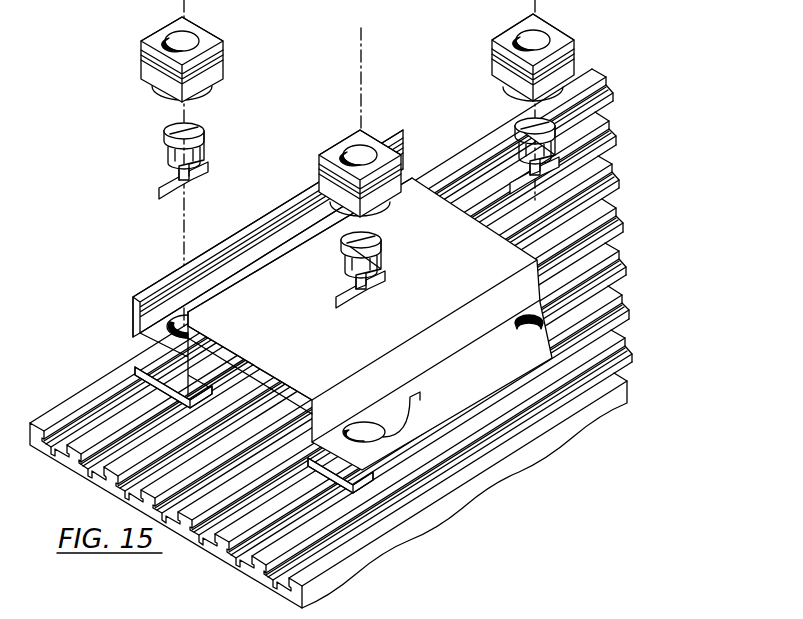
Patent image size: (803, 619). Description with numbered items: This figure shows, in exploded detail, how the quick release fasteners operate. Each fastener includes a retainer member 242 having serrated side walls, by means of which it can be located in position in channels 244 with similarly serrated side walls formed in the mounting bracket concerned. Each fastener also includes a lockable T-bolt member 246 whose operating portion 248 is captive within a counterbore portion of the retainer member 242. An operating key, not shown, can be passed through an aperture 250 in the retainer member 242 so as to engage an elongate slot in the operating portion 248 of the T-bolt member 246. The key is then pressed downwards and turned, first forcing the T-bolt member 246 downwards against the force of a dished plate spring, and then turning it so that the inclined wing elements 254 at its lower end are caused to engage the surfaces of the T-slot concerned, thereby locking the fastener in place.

The retainer member 242 is at (394, 108).
The channels 244 is at (157, 323).
The lockable T-bolt member 246 is at (324, 209).
The operating portion 248 is at (164, 143).
The aperture 250 is at (200, 34).
The inclined wing elements 254 is at (200, 180).